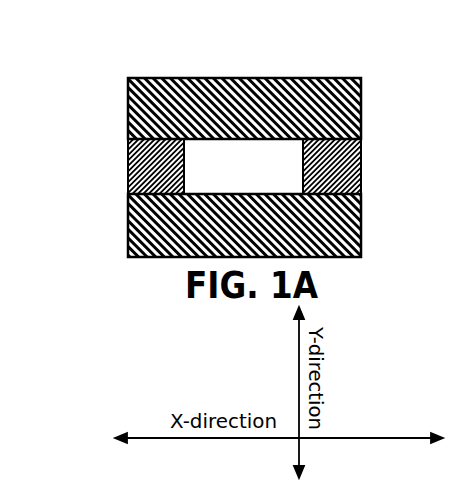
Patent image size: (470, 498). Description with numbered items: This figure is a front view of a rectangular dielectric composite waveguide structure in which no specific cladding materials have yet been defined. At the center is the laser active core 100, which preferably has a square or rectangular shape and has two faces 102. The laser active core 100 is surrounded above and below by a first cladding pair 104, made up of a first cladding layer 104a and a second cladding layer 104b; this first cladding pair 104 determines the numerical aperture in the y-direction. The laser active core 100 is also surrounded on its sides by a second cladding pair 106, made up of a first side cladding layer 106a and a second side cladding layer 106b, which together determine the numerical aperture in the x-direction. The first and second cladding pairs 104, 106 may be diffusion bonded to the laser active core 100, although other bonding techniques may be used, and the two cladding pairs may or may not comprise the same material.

The laser active core 100 is at (361, 148).
The faces 102 is at (238, 168).
The first cladding pair 104 is at (262, 167).
The first cladding layer 104a is at (225, 118).
The second cladding layer 104b is at (225, 240).
The second cladding pair 106 is at (241, 164).
The first side cladding layer 106a is at (316, 175).
The second side cladding layer 106b is at (72, 135).